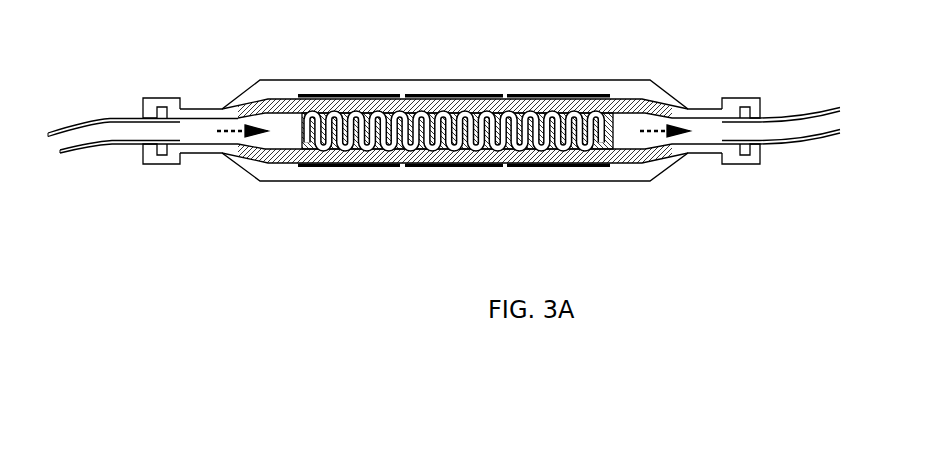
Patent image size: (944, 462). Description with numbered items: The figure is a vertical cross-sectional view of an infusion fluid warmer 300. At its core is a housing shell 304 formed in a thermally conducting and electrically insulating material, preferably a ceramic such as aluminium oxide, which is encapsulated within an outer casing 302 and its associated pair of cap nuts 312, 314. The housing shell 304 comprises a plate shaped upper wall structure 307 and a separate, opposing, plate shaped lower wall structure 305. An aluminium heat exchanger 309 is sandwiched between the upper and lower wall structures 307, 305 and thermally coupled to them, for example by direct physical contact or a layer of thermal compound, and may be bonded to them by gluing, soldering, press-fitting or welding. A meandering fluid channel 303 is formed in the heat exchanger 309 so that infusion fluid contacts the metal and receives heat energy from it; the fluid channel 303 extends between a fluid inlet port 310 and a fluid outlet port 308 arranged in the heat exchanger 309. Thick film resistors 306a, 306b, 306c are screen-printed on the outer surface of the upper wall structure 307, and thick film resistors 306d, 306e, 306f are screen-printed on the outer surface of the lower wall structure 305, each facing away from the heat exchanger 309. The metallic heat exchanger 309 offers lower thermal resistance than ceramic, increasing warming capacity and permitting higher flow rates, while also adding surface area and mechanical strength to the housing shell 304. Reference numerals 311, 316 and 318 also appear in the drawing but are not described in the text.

The infusion fluid warmer 300 is at (177, 217).
The outer casing 302 is at (315, 79).
The fluid channel 303 is at (345, 163).
The housing shell 304 is at (607, 98).
The lower wall structure 305 is at (430, 167).
The thick film resistor 306a is at (333, 96).
The thick film resistor 306b is at (420, 94).
The thick film resistor 306c is at (538, 94).
The thick film resistor 306d is at (542, 166).
The thick film resistor 306e is at (457, 166).
The thick film resistor 306f is at (357, 166).
The upper wall structure 307 is at (467, 52).
The fluid outlet port 308 is at (643, 166).
The heat exchanger 309 is at (280, 128).
The fluid inlet port 310 is at (278, 152).
The housing taper wall 311 is at (247, 116).
The cap nut 312 is at (163, 97).
The cap nut 314 is at (743, 98).
The outlet tube 316 is at (769, 150).
The inlet tube 318 is at (133, 138).